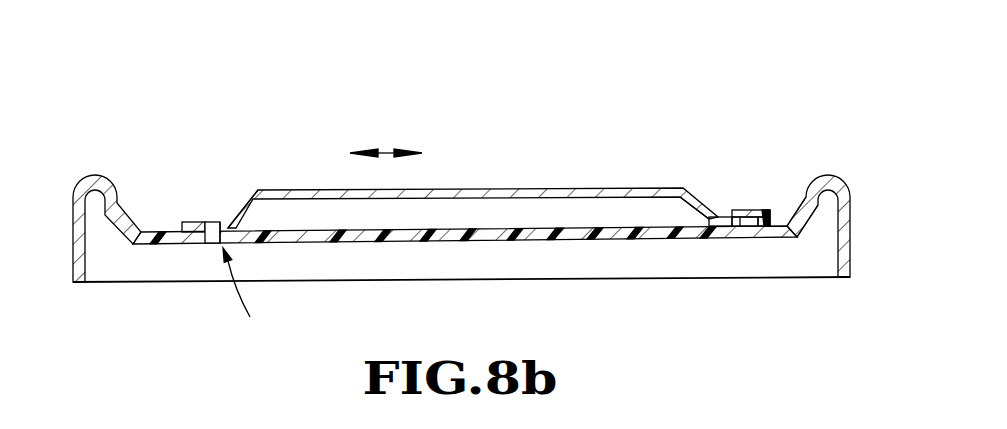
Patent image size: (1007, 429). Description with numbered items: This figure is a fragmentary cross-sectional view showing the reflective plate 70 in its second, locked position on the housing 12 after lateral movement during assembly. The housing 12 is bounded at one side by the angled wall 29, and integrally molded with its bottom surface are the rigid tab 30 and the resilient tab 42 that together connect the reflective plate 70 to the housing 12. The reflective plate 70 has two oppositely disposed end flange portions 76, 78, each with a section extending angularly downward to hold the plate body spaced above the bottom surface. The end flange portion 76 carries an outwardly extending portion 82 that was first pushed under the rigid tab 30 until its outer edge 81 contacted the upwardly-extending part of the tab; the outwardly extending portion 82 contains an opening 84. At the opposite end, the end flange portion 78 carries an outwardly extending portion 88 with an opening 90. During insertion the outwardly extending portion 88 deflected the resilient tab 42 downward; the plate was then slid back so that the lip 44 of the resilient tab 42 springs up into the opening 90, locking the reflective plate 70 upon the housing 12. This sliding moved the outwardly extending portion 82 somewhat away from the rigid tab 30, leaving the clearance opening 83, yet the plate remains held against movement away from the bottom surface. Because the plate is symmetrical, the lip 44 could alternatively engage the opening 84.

The housing 12 is at (864, 193).
The angled wall 29 is at (117, 192).
The rigid tab 30 is at (766, 210).
The resilient tab 42 is at (280, 243).
The lip 44 is at (212, 222).
The reflective plate 70 is at (492, 174).
The end flange portion 76 is at (677, 220).
The end flange portion 78 is at (235, 188).
The outer edge 81 is at (782, 236).
The outwardly extending portion 82 is at (745, 226).
The clearance opening 83 is at (755, 226).
The opening 84 is at (733, 220).
The outwardly extending portion 88 is at (220, 226).
The opening 90 is at (200, 222).